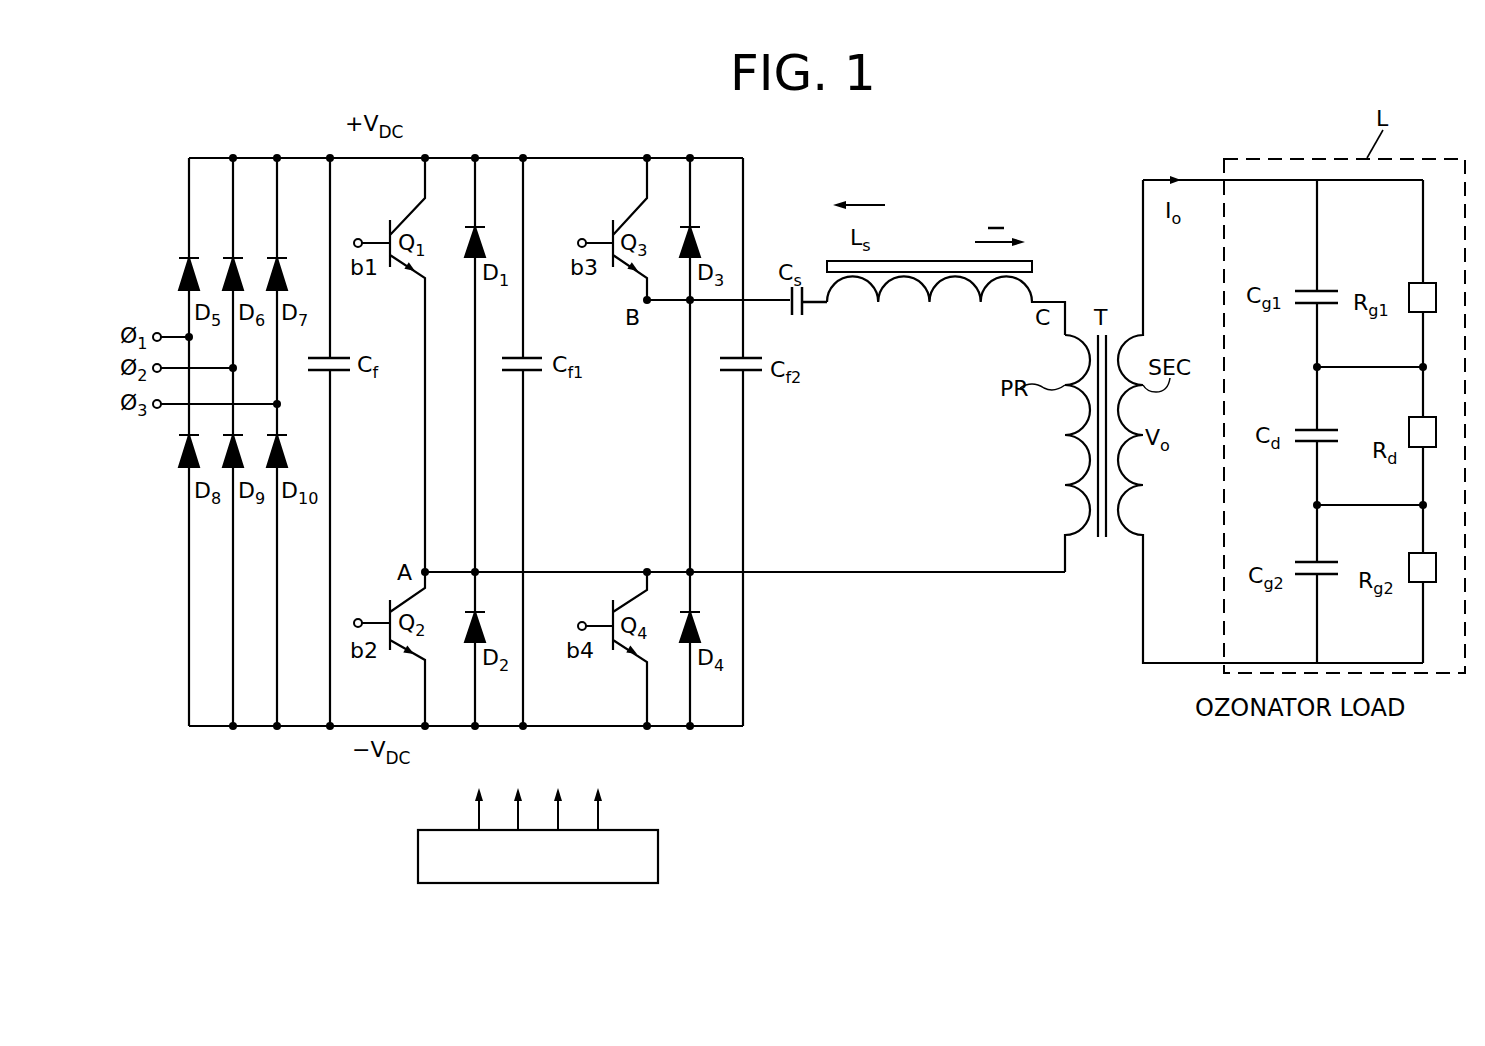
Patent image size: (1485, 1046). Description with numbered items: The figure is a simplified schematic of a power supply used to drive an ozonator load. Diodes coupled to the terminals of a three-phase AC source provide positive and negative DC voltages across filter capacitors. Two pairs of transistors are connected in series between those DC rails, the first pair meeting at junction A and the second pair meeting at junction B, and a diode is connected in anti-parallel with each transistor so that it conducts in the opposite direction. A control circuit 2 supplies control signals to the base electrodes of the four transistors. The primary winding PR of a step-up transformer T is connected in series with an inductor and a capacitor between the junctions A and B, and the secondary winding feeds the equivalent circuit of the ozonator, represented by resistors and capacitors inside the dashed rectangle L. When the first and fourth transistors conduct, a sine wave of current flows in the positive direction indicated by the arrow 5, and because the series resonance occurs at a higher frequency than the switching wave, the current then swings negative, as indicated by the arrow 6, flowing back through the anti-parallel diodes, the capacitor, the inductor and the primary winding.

The control circuit 2 is at (643, 830).
The arrow 5 is at (855, 198).
The arrow 6 is at (1019, 235).